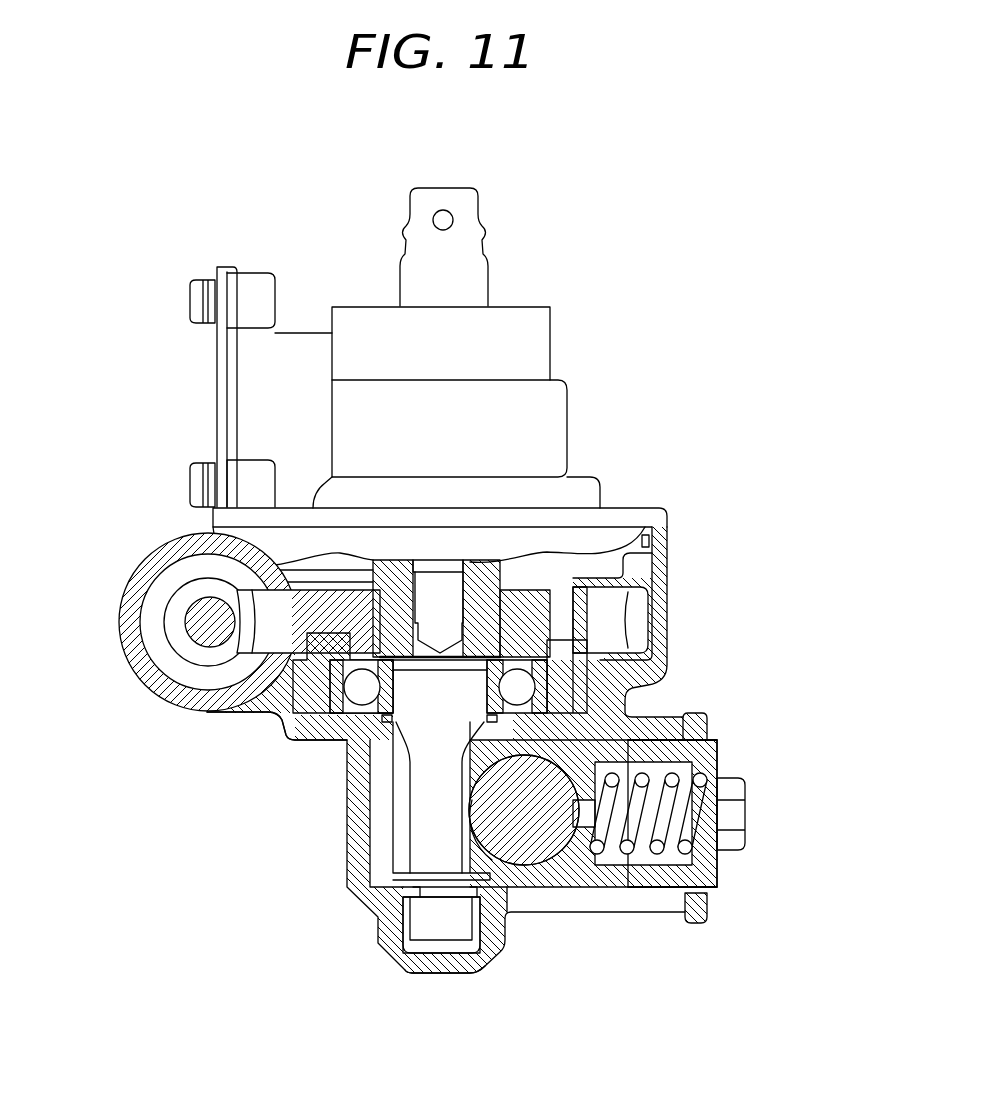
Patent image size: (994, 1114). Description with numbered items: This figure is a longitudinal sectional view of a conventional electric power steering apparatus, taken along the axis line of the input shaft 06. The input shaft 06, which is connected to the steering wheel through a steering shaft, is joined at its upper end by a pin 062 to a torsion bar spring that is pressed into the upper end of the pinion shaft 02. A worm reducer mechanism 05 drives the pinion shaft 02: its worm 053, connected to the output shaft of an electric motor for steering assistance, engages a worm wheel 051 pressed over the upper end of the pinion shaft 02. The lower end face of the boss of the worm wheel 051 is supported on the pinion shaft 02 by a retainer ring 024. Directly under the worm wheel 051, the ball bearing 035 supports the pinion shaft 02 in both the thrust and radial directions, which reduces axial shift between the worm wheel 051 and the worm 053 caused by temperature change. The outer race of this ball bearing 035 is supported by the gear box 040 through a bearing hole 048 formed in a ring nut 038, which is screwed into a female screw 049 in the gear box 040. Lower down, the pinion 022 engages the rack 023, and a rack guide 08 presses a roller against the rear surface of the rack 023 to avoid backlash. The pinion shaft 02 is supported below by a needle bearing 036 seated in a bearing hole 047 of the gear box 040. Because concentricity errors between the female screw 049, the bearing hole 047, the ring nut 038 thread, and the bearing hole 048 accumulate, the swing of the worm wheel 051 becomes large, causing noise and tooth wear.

The pin 062 is at (443, 211).
The input shaft 06 is at (465, 263).
The pinion shaft 02 is at (385, 560).
The worm 053 is at (172, 603).
The worm reducer mechanism 05 is at (155, 638).
The worm wheel 051 is at (630, 620).
The ball bearing 035 is at (522, 693).
The female screw 049 is at (215, 712).
The ring nut 038 is at (273, 713).
The bearing hole 048 is at (315, 740).
The retainer ring 024 is at (397, 730).
The rack 023 is at (497, 803).
The pinion 022 is at (407, 812).
The gear box 040 is at (357, 858).
The rack guide 08 is at (728, 865).
The bearing hole 047 is at (413, 957).
The needle bearing 036 is at (468, 973).